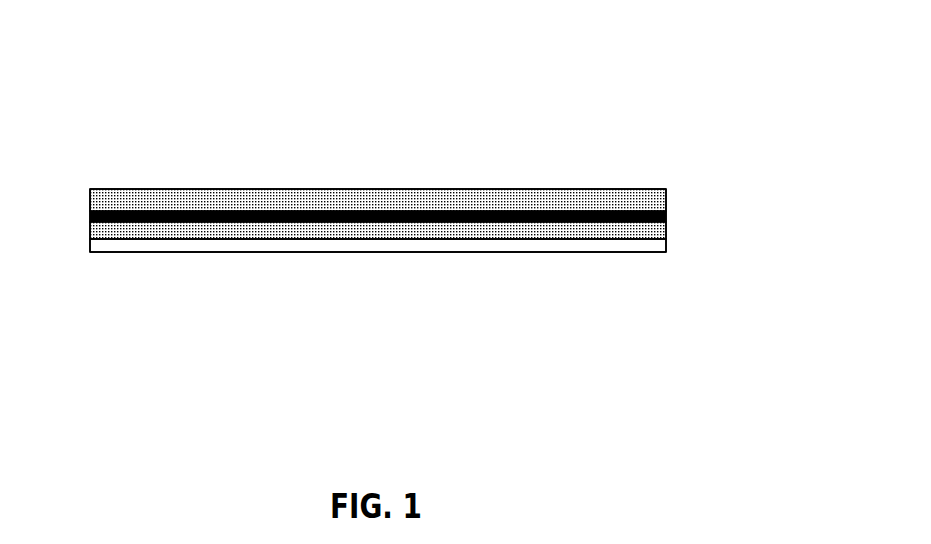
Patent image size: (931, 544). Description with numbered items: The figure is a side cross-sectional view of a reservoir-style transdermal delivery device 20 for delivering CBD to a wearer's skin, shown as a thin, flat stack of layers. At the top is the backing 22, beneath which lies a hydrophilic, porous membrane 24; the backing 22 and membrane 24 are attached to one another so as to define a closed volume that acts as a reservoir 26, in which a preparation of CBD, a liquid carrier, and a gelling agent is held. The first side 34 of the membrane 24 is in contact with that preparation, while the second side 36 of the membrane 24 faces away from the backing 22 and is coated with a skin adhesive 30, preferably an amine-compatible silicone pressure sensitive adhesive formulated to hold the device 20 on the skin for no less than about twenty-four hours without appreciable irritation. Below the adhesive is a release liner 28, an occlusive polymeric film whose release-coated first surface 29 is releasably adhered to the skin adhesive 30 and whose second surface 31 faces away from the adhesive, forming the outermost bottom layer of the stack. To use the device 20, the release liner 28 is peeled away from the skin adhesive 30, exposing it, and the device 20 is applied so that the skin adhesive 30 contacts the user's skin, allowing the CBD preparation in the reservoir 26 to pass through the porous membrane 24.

The reservoir-style transdermal delivery device 20 is at (440, 90).
The backing 22 is at (585, 175).
The hydrophilic, porous membrane 24 is at (555, 223).
The reservoir 26 is at (190, 202).
The release liner 28 is at (626, 248).
The first surface of release liner 29 is at (672, 233).
The skin adhesive 30 is at (243, 243).
The second surface of release liner 31 is at (97, 258).
The first side of hydrophilic, porous membrane 34 is at (603, 208).
The second side of hydrophilic, porous membrane 36 is at (398, 226).